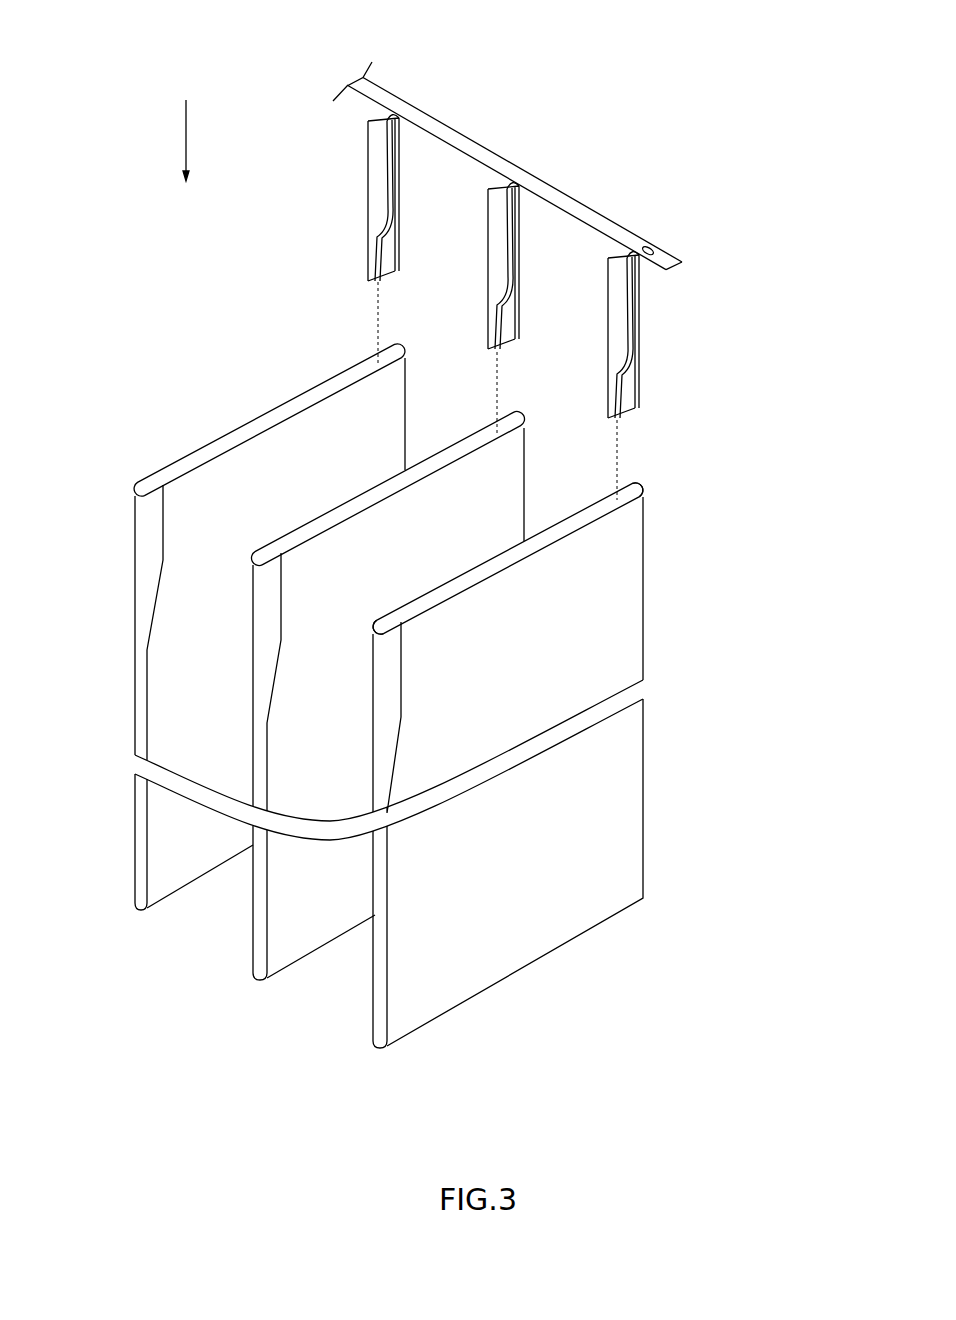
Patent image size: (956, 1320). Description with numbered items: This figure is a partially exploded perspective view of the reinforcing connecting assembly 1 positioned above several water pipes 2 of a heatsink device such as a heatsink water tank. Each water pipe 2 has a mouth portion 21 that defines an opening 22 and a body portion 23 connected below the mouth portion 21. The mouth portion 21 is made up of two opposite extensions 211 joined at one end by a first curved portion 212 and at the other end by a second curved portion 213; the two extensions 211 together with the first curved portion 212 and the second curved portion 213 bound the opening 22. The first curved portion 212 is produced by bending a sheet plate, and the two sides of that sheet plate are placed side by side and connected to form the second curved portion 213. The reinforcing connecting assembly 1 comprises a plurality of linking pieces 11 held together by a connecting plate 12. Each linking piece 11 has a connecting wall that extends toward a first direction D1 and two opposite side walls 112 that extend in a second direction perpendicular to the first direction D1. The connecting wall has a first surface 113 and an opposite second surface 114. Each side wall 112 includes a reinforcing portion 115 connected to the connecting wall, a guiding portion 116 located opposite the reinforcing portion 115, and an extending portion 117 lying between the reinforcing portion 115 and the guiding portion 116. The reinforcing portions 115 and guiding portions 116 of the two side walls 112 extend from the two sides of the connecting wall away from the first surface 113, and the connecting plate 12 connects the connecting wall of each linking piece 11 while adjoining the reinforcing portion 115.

The reinforcing connecting assembly 1 is at (453, 120).
The linking piece 11 is at (555, 307).
The connecting plate 12 is at (498, 154).
The side wall 112 is at (607, 309).
The first surface 113 is at (640, 378).
The second surface 114 is at (627, 256).
The reinforcing portion 115 is at (639, 287).
The guiding portion 116 is at (609, 402).
The extending portion 117 is at (608, 348).
The water pipe 2 is at (195, 446).
The mouth portion 21 is at (544, 749).
The extension 211 is at (552, 512).
The first curved portion 212 is at (645, 479).
The second curved portion 213 is at (375, 637).
The opening 22 is at (539, 552).
The body portion 23 is at (645, 850).
The first direction D1 is at (186, 154).